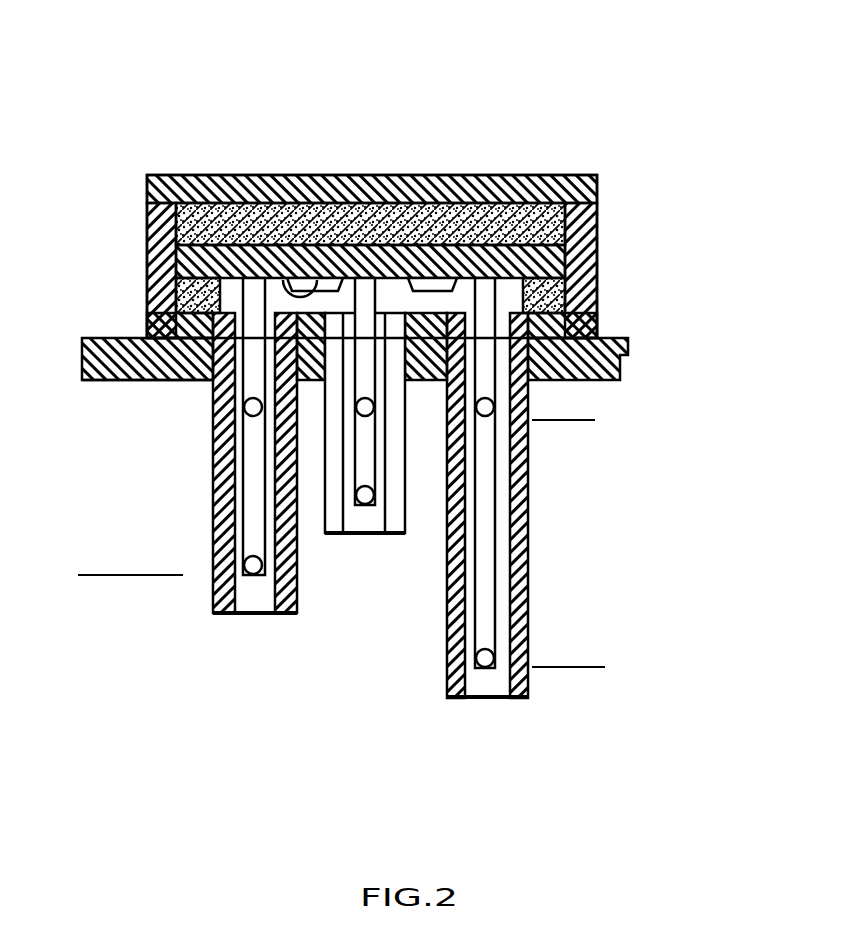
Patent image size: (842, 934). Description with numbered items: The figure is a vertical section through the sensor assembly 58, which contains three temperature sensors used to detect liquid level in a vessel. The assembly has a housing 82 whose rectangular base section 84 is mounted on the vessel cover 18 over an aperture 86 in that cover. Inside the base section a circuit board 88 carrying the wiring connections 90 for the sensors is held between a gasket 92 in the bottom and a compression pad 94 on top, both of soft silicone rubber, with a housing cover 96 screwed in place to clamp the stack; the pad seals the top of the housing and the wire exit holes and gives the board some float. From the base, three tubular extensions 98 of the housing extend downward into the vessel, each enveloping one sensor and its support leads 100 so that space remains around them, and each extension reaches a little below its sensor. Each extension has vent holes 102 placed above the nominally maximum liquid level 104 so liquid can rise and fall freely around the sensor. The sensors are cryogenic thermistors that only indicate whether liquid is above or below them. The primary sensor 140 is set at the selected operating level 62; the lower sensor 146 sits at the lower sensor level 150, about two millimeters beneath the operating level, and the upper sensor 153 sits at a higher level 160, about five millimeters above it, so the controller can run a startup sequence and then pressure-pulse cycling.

The assembly of sensors 58 is at (494, 100).
The housing 82 is at (550, 174).
The base section 84 is at (147, 212).
The aperture 86 is at (212, 386).
The circuit board 88 is at (597, 250).
The wiring connections 90 is at (291, 286).
The gasket 92 is at (147, 281).
The compression pad 94 is at (240, 206).
The housing cover 96 is at (398, 175).
The tubular extensions 98 is at (533, 582).
The support leads 100 is at (495, 532).
The vent holes 102 is at (486, 416).
The nominally maximum liquid level 104 is at (565, 420).
The primary sensor 140 is at (255, 573).
The lower sensor 146 is at (486, 667).
The lower sensor level 150 is at (605, 667).
The upper sensor 153 is at (366, 503).
The higher level 160 is at (300, 503).
The vessel cover 18 is at (93, 381).
The selected operating level 62 is at (138, 575).